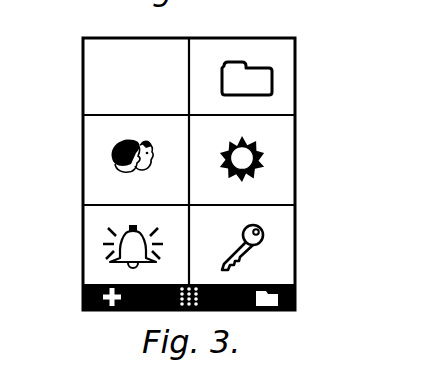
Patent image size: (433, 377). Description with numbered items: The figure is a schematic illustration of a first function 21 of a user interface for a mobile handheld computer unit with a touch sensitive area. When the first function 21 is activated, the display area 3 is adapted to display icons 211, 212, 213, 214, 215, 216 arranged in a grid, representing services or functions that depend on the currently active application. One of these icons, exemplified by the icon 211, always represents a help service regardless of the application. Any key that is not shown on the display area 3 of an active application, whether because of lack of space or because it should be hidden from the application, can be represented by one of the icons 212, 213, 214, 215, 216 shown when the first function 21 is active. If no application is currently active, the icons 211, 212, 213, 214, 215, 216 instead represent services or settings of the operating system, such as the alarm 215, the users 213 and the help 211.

The display area 3 is at (280, 143).
The first function 21 is at (113, 310).
The help icon 211 is at (104, 72).
The icon 212 is at (255, 57).
The users icon 213 is at (104, 137).
The icon 214 is at (283, 177).
The alarm icon 215 is at (100, 225).
The icon 216 is at (278, 262).